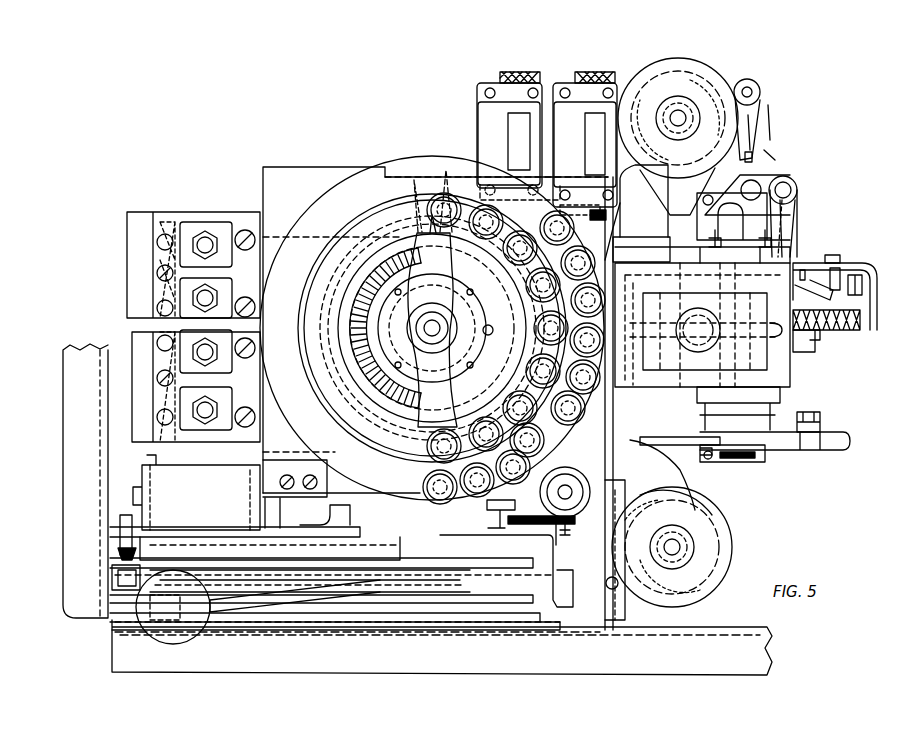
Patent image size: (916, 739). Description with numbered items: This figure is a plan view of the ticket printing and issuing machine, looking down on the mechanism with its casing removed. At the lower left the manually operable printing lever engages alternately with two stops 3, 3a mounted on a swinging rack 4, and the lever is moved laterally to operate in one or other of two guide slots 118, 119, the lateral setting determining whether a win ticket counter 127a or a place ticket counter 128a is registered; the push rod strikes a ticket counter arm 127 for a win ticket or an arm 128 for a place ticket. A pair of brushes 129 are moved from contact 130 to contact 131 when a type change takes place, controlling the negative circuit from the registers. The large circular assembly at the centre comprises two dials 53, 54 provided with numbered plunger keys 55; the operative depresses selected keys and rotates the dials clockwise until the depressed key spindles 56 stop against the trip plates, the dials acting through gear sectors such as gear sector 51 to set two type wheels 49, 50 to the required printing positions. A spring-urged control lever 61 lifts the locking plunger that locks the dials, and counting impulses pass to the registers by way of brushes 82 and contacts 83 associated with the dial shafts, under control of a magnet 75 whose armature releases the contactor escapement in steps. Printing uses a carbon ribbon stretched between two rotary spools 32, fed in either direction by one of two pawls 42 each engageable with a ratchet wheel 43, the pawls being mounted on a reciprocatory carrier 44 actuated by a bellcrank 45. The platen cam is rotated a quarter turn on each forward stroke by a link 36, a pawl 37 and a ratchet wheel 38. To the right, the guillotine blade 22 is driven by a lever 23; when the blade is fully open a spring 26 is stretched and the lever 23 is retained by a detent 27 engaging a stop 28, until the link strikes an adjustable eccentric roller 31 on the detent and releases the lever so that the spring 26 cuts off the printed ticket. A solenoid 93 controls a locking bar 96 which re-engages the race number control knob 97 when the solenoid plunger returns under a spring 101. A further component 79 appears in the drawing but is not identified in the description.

The stop 3 is at (322, 580).
The stop 3a is at (240, 598).
The swinging rack 4 is at (225, 548).
The guillotine blade 22 is at (658, 290).
The lever 23 is at (792, 286).
The spring 26 is at (842, 320).
The detent 27 is at (850, 263).
The stop 28 is at (814, 294).
The adjustable eccentric roller 31 is at (856, 290).
The spools 32 is at (696, 75).
The link 36 is at (846, 441).
The pawl 37 is at (732, 454).
The ratchet wheel 38 is at (697, 473).
The pawls 42 is at (628, 600).
The ratchet wheel 43 is at (706, 136).
The reciprocatory carrier 44 is at (743, 207).
The bellcrank 45 is at (798, 212).
The type wheel 49 is at (598, 260).
The type wheel 50 is at (641, 213).
The gear sector 51 is at (478, 300).
The dial 53 is at (404, 170).
The dial 54 is at (361, 222).
The plunger keys 55 is at (588, 420).
The key spindles 56 is at (508, 398).
The control lever 61 is at (300, 528).
The magnet 75 is at (193, 265).
The clamp block 79 is at (196, 386).
The brushes 82 is at (450, 385).
The contacts 83 is at (362, 290).
The solenoid 93 is at (178, 465).
The locking bar 96 is at (512, 500).
The race number control knob 97 is at (568, 483).
The spring 101 is at (561, 530).
The guide slot 118 is at (386, 615).
The guide slot 119 is at (465, 568).
The ticket counter arm 127 is at (556, 192).
The ticket counter 127a is at (509, 130).
The arm 128 is at (600, 212).
The ticket counter 128a is at (585, 139).
The brushes 129 is at (118, 552).
The contact 130 is at (112, 572).
The contact 131 is at (124, 528).